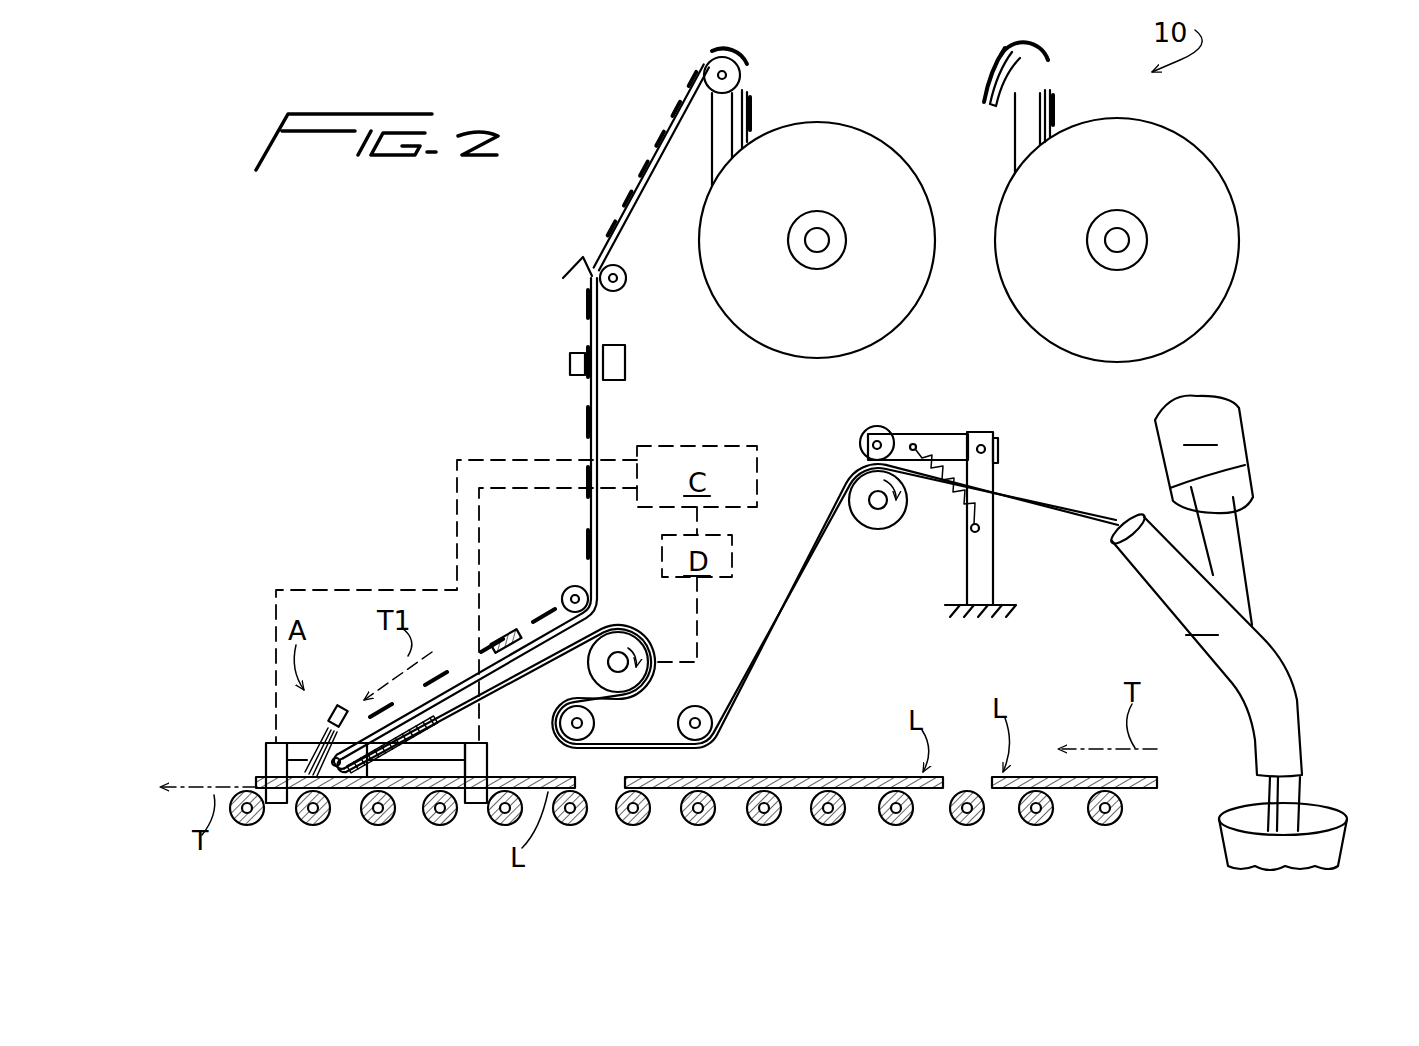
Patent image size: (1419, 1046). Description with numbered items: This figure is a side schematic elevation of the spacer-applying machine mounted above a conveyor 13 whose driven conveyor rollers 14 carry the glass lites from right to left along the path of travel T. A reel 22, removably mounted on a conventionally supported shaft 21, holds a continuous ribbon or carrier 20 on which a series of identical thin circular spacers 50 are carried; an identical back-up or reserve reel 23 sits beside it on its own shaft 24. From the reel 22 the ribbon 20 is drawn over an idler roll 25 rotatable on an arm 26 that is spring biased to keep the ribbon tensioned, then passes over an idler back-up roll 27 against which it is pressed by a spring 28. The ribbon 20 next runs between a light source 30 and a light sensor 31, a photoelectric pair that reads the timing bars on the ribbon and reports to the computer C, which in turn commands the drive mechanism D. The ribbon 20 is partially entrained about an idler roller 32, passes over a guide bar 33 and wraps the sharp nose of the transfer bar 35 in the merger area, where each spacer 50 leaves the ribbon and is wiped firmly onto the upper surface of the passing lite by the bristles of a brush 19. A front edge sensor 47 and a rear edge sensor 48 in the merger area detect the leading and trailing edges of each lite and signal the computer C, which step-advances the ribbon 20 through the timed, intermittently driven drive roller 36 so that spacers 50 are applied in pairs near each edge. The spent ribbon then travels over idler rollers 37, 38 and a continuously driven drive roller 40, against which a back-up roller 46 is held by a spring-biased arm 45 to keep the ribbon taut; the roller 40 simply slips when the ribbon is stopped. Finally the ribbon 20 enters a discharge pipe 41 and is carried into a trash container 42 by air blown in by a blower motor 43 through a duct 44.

The conveyor 13 is at (830, 832).
The conveyor rollers 14 is at (252, 826).
The brush 19 is at (326, 706).
The ribbon or carrier 20 is at (756, 62).
The shaft 21 is at (824, 240).
The reel 22 is at (826, 128).
The back-up or reserve reel 23 is at (1188, 150).
The shaft 24 is at (1122, 240).
The idler roll 25 is at (705, 66).
The arm 26 is at (716, 140).
The idler back-up roll 27 is at (628, 278).
The spring 28 is at (580, 262).
The light source 30 is at (570, 360).
The light sensor 31 is at (625, 355).
The idler roller 32 is at (569, 588).
The guide bar 33 is at (505, 668).
The transfer bar 35 is at (398, 770).
The drive roller 36 is at (622, 650).
The idler roller 37 is at (595, 722).
The idler roller 38 is at (697, 718).
The drive roller 40 is at (872, 527).
The discharge pipe 41 is at (1204, 643).
The trash container 42 is at (1283, 836).
The blower motor 43 is at (1204, 455).
The duct 44 is at (1231, 557).
The spring-biased arm 45 is at (945, 437).
The back-up roller 46 is at (875, 427).
The front edge sensor 47 is at (268, 760).
The rear edge sensor 48 is at (488, 762).
The spacers 50 is at (680, 87).